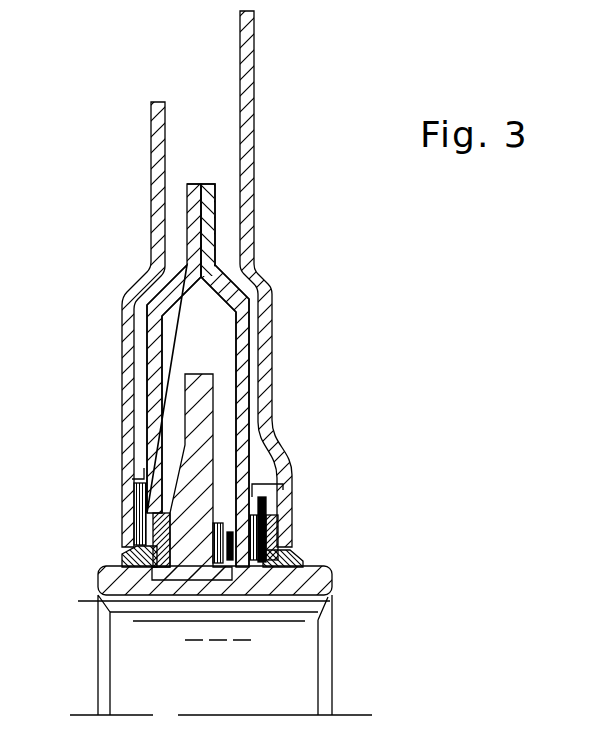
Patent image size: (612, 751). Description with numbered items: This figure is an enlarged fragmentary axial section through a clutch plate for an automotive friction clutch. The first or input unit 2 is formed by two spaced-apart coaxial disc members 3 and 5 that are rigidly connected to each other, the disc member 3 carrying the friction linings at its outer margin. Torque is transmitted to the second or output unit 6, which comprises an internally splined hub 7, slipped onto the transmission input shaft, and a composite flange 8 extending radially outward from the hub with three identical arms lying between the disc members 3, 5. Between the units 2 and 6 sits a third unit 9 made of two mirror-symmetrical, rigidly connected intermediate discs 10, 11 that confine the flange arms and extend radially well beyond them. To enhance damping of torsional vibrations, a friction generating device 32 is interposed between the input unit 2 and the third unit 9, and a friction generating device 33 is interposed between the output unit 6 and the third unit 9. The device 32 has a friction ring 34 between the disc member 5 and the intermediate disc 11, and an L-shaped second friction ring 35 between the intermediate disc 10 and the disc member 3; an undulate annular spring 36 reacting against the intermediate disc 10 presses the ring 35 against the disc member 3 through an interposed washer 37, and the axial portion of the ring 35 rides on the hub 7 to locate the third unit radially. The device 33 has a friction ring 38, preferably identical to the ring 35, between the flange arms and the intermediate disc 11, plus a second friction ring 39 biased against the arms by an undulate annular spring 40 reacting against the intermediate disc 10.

The first or input unit 2 is at (253, 80).
The disc member 3 is at (247, 144).
The disc member 5 is at (132, 417).
The second or output unit 6 is at (328, 594).
The hub 7 is at (327, 583).
The composite flange 8 is at (190, 489).
The third unit 9 is at (228, 305).
The intermediate disc 10 is at (242, 338).
The intermediate disc 11 is at (152, 388).
The friction generating device 32 is at (140, 477).
The friction generating device 33 is at (206, 553).
The friction ring 34 is at (137, 525).
The second friction ring 35 is at (280, 543).
The undulate annular spring 36 is at (275, 530).
The washer 37 is at (260, 568).
The friction ring 38 is at (110, 573).
The second friction ring 39 is at (224, 524).
The undulate annular spring 40 is at (245, 567).